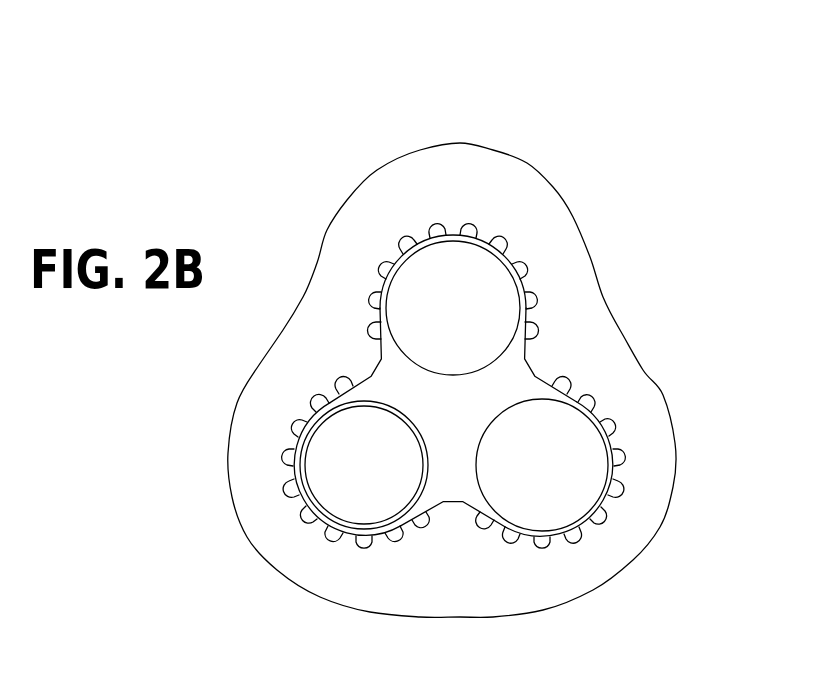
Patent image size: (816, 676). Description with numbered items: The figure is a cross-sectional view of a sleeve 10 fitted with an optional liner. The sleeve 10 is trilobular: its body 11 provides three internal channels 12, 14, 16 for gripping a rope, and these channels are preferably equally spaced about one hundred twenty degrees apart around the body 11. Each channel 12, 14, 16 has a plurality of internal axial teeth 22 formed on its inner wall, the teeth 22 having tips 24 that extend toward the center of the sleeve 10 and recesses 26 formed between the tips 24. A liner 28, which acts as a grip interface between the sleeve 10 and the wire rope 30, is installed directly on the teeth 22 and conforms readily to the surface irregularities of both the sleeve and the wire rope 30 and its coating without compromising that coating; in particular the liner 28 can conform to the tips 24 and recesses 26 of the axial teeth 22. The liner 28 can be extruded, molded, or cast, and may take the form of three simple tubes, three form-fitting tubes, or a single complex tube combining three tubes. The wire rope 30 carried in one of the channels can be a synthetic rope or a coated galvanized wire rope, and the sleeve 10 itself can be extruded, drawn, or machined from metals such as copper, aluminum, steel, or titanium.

The sleeve 10 is at (500, 135).
The body 11 is at (373, 167).
The internal channel 12 is at (441, 259).
The internal channel 14 is at (624, 494).
The internal channel 16 is at (285, 484).
The internal axial teeth 22 is at (484, 222).
The tips 24 is at (510, 255).
The recesses 26 is at (530, 265).
The liner 28 is at (571, 395).
The wire rope 30 is at (347, 483).